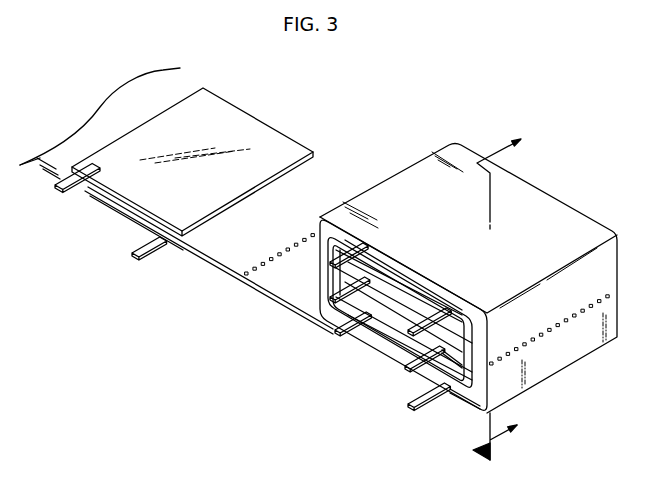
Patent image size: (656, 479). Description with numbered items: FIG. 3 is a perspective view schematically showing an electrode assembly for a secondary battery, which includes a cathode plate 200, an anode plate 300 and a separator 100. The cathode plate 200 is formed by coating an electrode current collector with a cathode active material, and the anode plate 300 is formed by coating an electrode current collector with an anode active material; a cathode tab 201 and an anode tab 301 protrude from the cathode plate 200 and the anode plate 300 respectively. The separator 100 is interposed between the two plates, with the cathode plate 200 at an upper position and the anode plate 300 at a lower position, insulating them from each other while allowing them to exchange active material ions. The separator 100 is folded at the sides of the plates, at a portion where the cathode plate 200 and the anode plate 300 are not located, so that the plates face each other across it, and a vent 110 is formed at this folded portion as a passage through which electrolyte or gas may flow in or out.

The separator 100 is at (217, 257).
The vent 110 is at (259, 278).
The cathode plate 200 is at (260, 123).
The cathode tab 201 is at (57, 188).
The anode plate 300 is at (115, 210).
The anode tab 301 is at (135, 256).